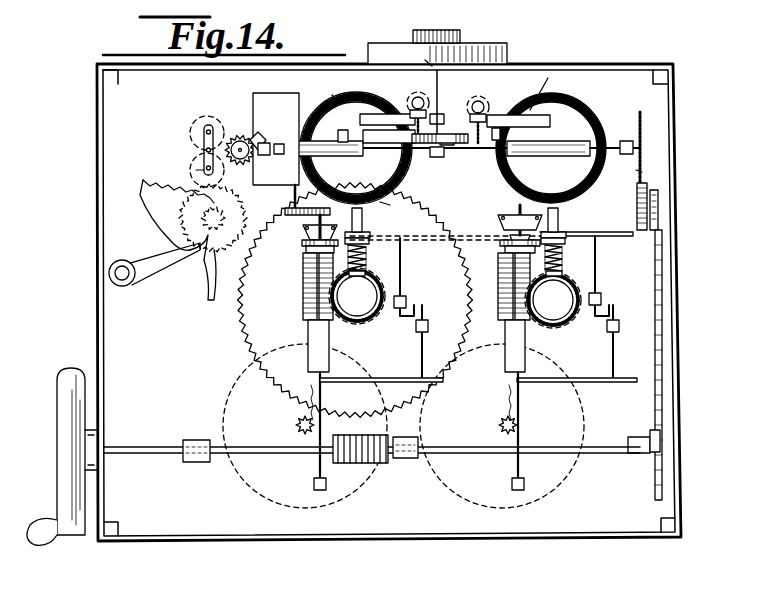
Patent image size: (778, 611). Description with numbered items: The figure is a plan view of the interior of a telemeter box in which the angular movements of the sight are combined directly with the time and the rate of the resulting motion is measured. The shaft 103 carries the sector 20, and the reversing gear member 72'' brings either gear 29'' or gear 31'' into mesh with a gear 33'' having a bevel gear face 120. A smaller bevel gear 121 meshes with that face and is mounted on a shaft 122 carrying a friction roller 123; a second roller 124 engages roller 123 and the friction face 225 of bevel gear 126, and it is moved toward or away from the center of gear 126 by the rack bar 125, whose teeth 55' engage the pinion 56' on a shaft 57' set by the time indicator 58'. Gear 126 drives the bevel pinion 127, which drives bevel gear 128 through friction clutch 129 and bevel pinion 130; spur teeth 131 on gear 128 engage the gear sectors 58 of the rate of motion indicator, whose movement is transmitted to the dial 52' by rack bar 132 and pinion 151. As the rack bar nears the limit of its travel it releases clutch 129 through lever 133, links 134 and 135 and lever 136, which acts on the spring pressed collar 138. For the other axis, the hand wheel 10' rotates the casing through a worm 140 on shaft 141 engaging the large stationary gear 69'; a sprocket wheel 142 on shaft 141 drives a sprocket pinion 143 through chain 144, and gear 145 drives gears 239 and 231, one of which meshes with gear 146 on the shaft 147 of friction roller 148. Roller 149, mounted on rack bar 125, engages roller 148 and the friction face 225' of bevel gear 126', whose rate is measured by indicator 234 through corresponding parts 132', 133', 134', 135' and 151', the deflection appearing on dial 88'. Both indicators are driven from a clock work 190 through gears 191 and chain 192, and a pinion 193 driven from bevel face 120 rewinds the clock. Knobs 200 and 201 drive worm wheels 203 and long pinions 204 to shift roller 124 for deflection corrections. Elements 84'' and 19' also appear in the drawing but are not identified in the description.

The hand wheel 10' is at (62, 446).
The sector 20 is at (152, 192).
The gear 29'' is at (182, 165).
The gear 31'' is at (207, 137).
The gear 33'' is at (240, 138).
The dial 52' is at (289, 426).
The teeth 55' is at (446, 126).
The pinion 56' is at (440, 156).
The shaft 57' is at (453, 102).
The gear sectors 58 is at (301, 285).
The time indicator 58' is at (437, 45).
The large stationary gear 69' is at (334, 300).
The reversing gear member 72'' is at (181, 129).
The solenoid plunger 84'' is at (297, 346).
The dial 88' is at (516, 426).
The shaft 103 is at (130, 280).
The bevel gear face 120 is at (244, 154).
The smaller bevel gear 121 is at (262, 142).
The shaft 122 is at (385, 160).
The friction roller 123 is at (324, 159).
The second roller 124 is at (376, 128).
The rack bar 125 is at (428, 80).
The bevel gear 126 is at (356, 137).
The bevel gear 126' is at (564, 153).
The bevel pinion 127 is at (399, 200).
The bevel gear 128 is at (360, 273).
The friction clutch 129 is at (400, 237).
The bevel pinion 130 is at (357, 296).
The spur teeth 131 is at (372, 312).
The rack bar 132 is at (303, 431).
The rod 132' is at (501, 431).
The lever 133 is at (381, 370).
The bracket bar 133' is at (577, 370).
The link 134 is at (437, 342).
The vertical link 134' is at (627, 335).
The link 135 is at (415, 277).
The vertical link 135' is at (611, 276).
The lever 136 is at (465, 243).
The spring pressed collar 138 is at (368, 230).
The worm 140 is at (378, 463).
The shaft 141 is at (592, 452).
The sprocket wheel 142 is at (655, 478).
The sprocket pinion 143 is at (655, 190).
The chain 144 is at (662, 300).
The gear 145 is at (637, 206).
The gear 146 is at (636, 146).
The shaft 147 is at (610, 145).
The friction roller 148 is at (560, 156).
The cooperating friction roller 149 is at (535, 113).
The pinion 151 is at (287, 425).
The pinion 151' is at (489, 425).
The clock work 190 is at (272, 95).
The gears 191 is at (320, 234).
The chain 192 is at (478, 235).
The pinion 193 is at (268, 125).
The knob 200 is at (415, 57).
The knob 201 is at (486, 100).
The worm wheels 203 is at (430, 120).
The long pinion 204 is at (551, 84).
The friction face 225 is at (317, 88).
The friction face 225' is at (530, 155).
The gear 231 is at (641, 112).
The rate of motion indicator 234 is at (497, 288).
The gear 239 is at (624, 172).
The rack bar 19' is at (299, 224).